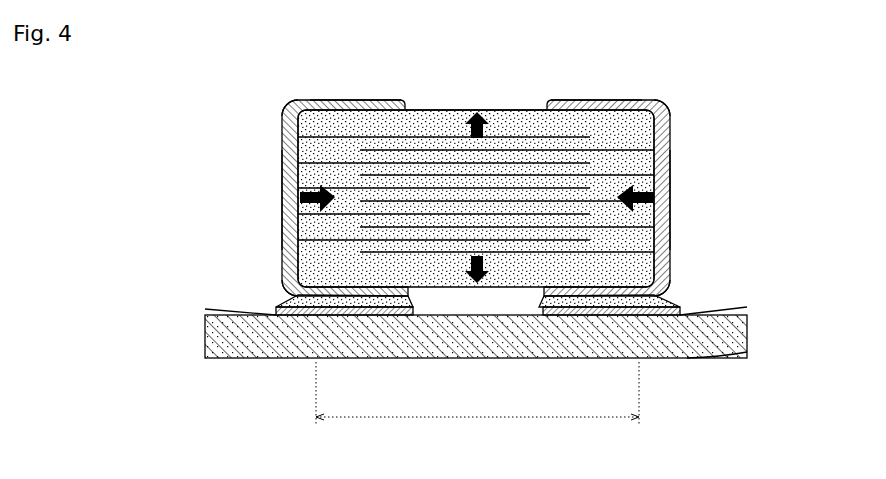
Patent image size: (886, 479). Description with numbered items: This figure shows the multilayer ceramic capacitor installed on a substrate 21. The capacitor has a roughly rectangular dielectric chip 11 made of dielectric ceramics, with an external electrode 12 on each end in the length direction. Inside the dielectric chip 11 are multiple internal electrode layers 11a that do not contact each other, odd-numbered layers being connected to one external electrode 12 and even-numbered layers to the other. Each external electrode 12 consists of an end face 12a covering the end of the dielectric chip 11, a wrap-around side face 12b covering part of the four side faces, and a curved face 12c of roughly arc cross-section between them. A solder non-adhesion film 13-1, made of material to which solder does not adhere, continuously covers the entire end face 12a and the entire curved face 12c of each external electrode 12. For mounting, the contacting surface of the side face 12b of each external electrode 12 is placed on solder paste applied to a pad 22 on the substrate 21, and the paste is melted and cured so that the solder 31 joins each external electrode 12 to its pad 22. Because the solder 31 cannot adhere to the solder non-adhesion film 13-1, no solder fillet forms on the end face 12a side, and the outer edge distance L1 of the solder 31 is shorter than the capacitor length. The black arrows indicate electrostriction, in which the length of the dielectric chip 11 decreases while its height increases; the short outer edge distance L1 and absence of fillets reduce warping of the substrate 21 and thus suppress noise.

The dielectric chip 11 is at (457, 110).
The internal electrode layer 11a is at (520, 112).
The external electrode 12 is at (282, 167).
The end face 12a is at (282, 200).
The side face 12b is at (357, 100).
The curved face 12c is at (292, 104).
The solder non-adhesion film 13-1 is at (282, 228).
The substrate 21 is at (237, 362).
The pad 22 is at (350, 362).
The solder 31 is at (387, 362).
The outer edge distance L1 is at (477, 400).